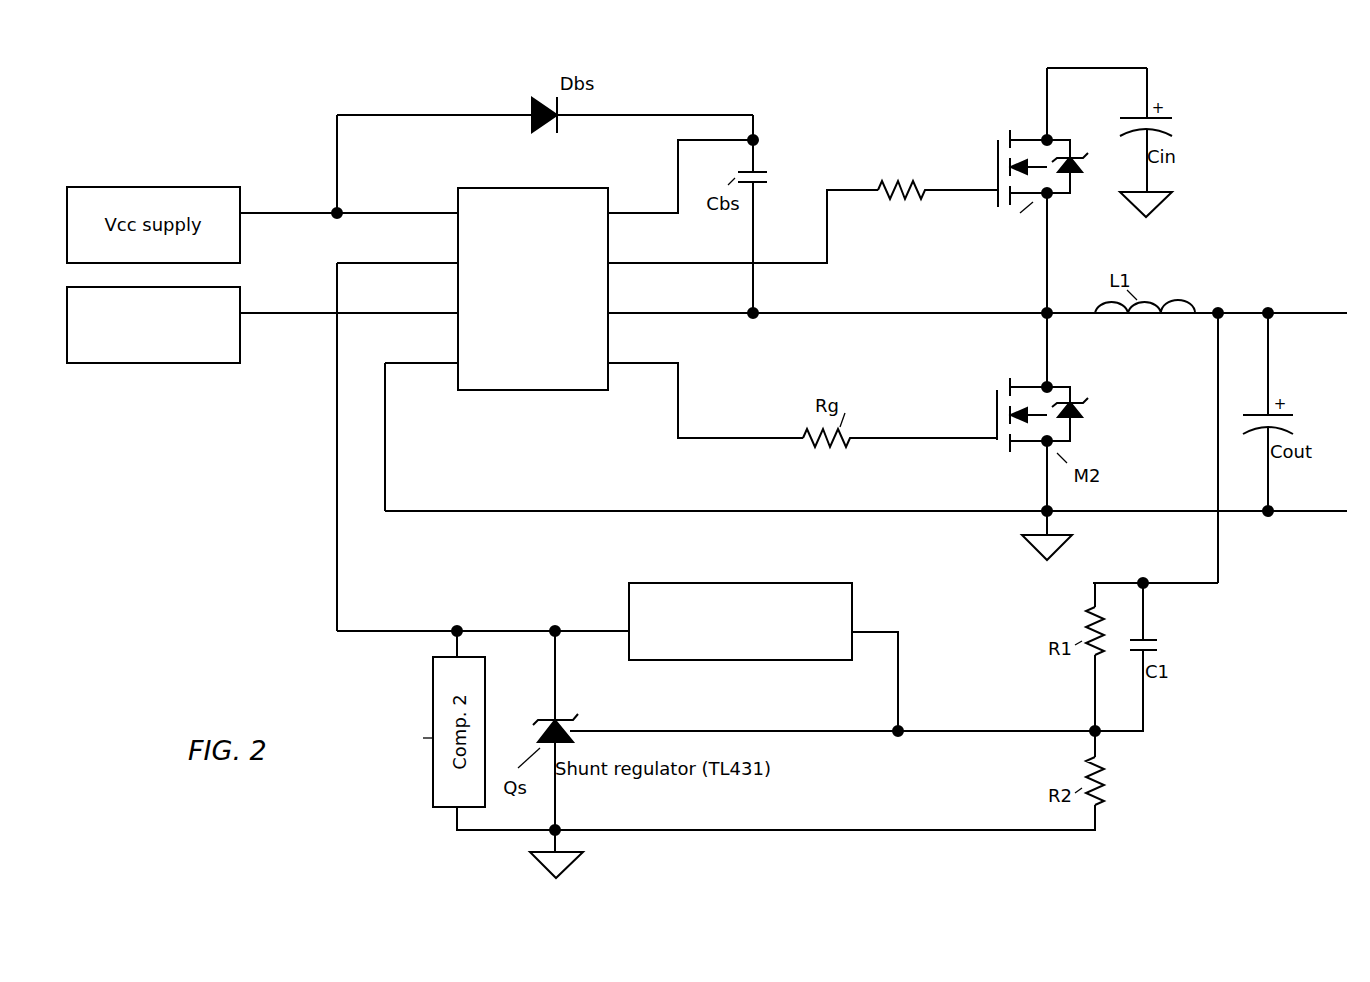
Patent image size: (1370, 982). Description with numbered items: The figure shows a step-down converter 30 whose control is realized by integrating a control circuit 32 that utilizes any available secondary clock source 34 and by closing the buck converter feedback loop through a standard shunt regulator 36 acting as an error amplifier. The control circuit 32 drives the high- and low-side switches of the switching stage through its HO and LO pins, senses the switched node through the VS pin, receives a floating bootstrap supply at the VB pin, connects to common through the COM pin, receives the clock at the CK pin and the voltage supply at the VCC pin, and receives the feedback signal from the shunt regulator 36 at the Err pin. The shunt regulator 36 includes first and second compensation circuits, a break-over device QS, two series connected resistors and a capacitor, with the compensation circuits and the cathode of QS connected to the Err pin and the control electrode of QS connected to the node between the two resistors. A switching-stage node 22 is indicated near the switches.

The switching node / half-bridge output 22 is at (1024, 258).
The step-down converter 30 is at (864, 130).
The control circuit 32 is at (523, 392).
The secondary clock source 34 is at (165, 366).
The shunt regulator 36 is at (730, 703).